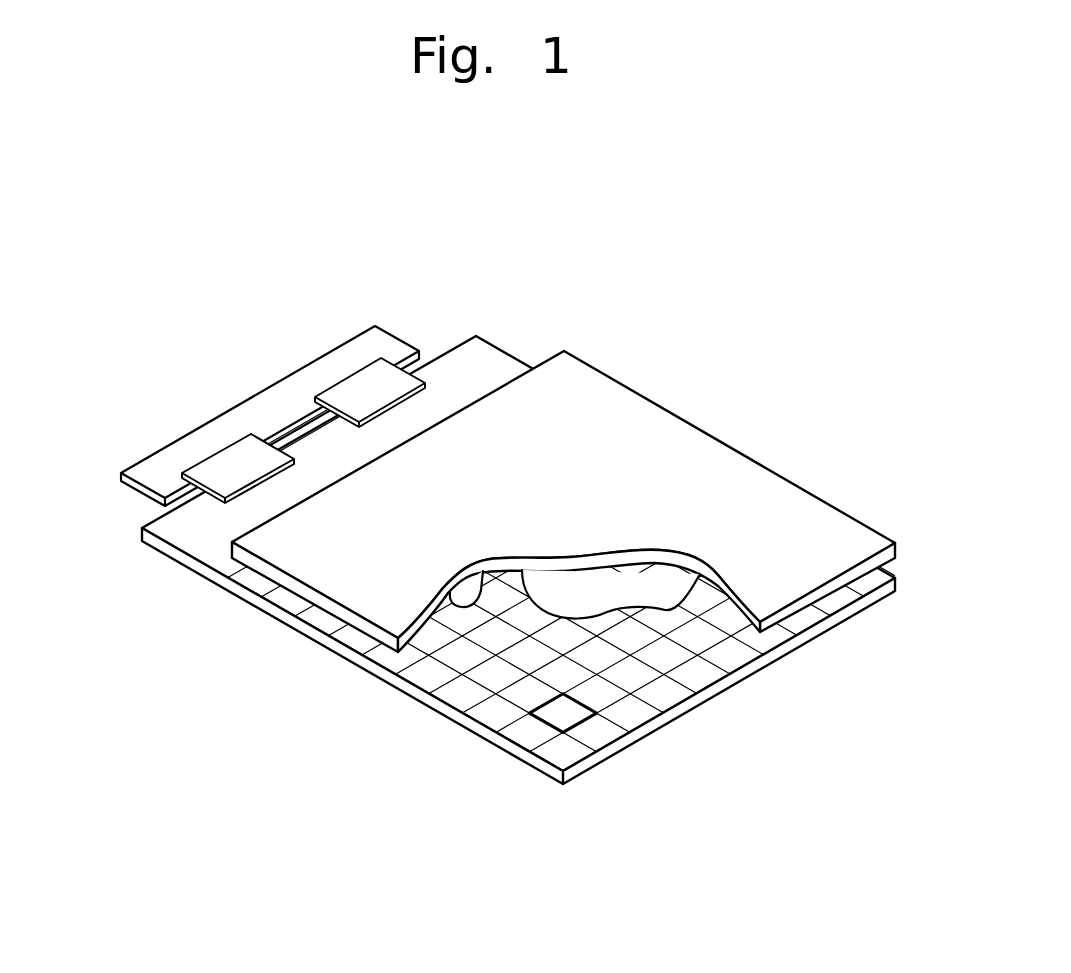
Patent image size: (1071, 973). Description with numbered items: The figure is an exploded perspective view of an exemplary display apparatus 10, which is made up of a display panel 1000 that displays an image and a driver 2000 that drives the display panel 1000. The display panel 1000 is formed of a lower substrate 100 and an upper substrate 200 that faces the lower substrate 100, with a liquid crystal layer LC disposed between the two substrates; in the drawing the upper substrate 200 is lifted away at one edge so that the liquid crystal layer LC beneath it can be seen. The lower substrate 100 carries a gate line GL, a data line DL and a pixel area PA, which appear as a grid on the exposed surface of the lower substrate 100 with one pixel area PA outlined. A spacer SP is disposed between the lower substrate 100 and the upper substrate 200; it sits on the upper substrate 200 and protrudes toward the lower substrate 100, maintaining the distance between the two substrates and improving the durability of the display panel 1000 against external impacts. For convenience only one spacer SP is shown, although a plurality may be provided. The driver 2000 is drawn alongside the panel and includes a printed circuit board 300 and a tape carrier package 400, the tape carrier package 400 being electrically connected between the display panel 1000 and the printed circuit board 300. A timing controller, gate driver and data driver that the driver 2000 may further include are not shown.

The display apparatus 10 is at (529, 515).
The lower substrate 100 is at (563, 545).
The upper substrate 200 is at (563, 577).
The printed circuit board 300 is at (277, 395).
The tape carrier package 400 is at (227, 460).
The display panel 1000 is at (563, 545).
The driver 2000 is at (241, 416).
The spacer SP is at (464, 594).
The liquid crystal layer LC is at (635, 590).
The pixel area PA is at (542, 723).
The gate line GL is at (482, 703).
The data line DL is at (677, 680).